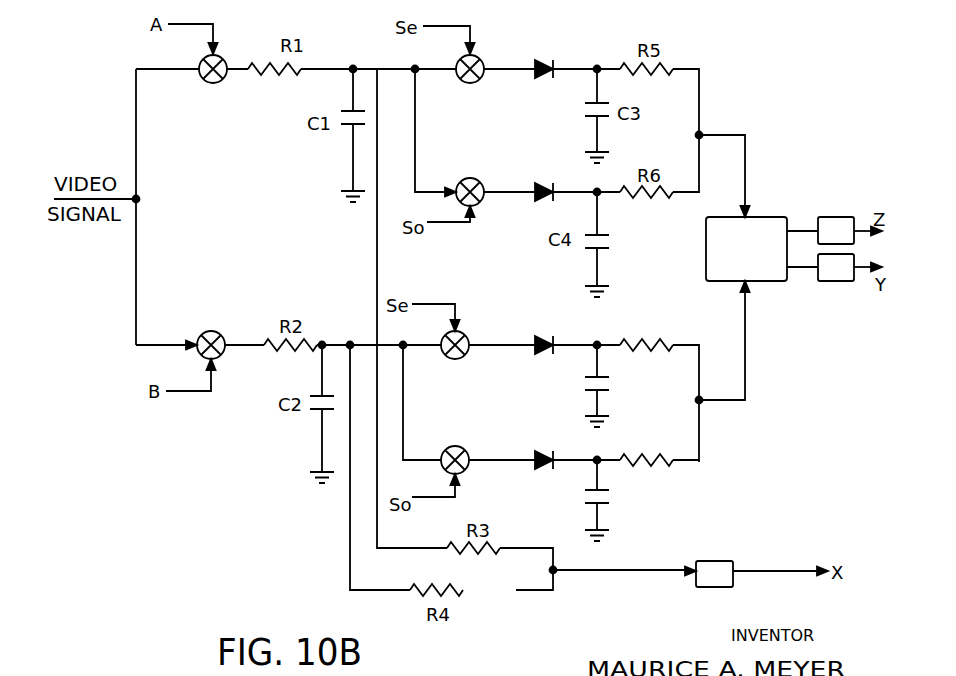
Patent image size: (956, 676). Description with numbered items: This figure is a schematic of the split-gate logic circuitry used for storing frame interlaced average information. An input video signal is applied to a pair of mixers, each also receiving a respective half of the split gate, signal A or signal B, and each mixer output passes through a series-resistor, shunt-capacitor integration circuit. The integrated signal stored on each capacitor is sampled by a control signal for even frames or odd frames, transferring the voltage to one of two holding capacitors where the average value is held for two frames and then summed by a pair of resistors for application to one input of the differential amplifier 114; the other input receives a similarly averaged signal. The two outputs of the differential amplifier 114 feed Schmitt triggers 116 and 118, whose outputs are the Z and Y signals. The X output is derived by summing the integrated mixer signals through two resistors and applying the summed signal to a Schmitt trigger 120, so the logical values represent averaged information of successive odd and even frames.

The differential amplifier 114 is at (762, 217).
The Schmitt trigger 116 is at (838, 217).
The Schmitt trigger (Y output) 118 is at (832, 281).
The Schmitt trigger 120 is at (722, 561).